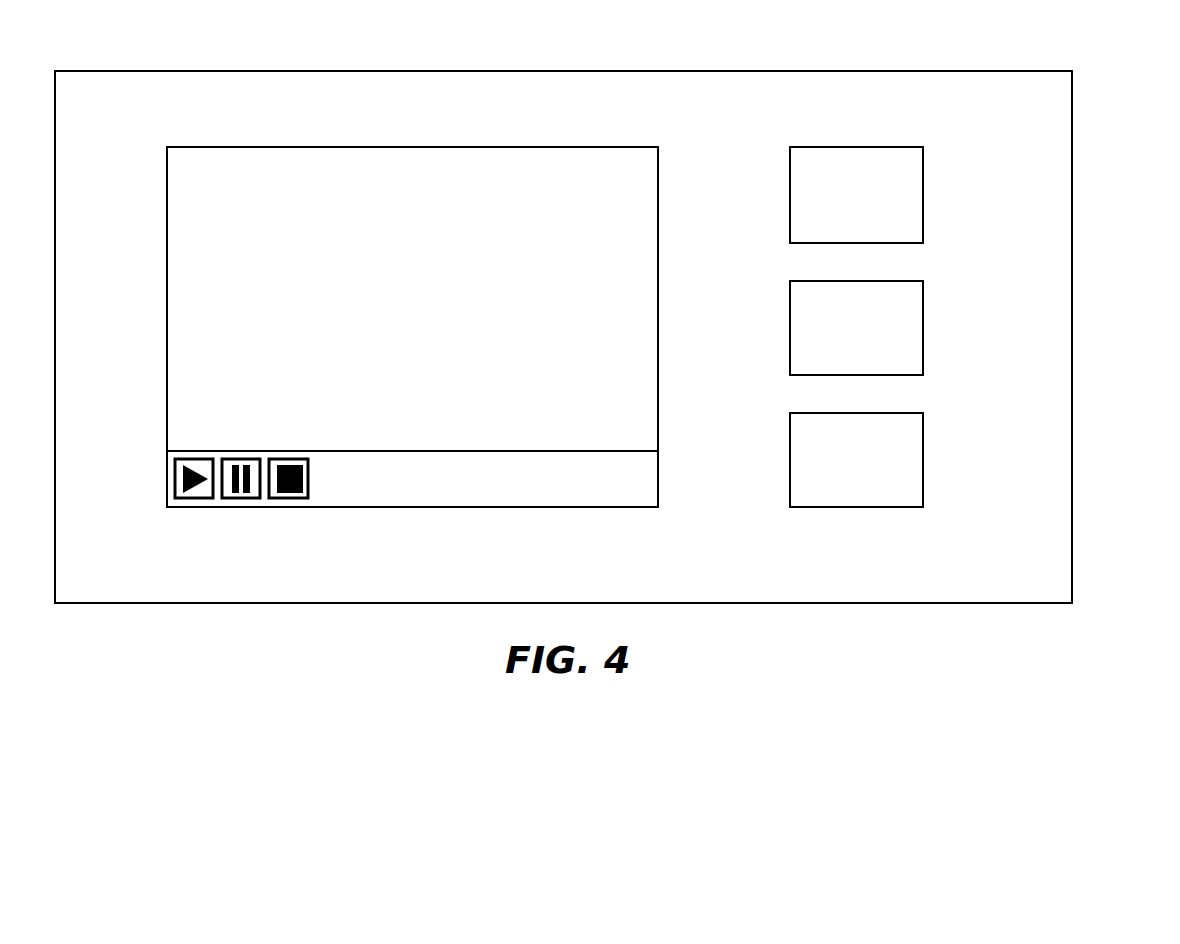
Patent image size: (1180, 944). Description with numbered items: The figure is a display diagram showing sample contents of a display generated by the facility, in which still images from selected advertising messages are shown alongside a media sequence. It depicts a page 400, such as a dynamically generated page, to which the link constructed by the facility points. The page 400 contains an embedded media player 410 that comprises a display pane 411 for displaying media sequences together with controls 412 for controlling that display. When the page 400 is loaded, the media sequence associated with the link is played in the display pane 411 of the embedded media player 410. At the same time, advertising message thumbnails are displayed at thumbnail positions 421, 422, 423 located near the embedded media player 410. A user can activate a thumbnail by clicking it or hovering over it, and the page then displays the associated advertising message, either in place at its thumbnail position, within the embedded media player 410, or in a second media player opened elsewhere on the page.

The page 400 is at (604, 323).
The embedded media player 410 is at (453, 312).
The display pane 411 is at (448, 299).
The controls 412 is at (162, 451).
The thumbnail position 421 is at (897, 180).
The thumbnail position 422 is at (897, 312).
The thumbnail position 423 is at (897, 444).